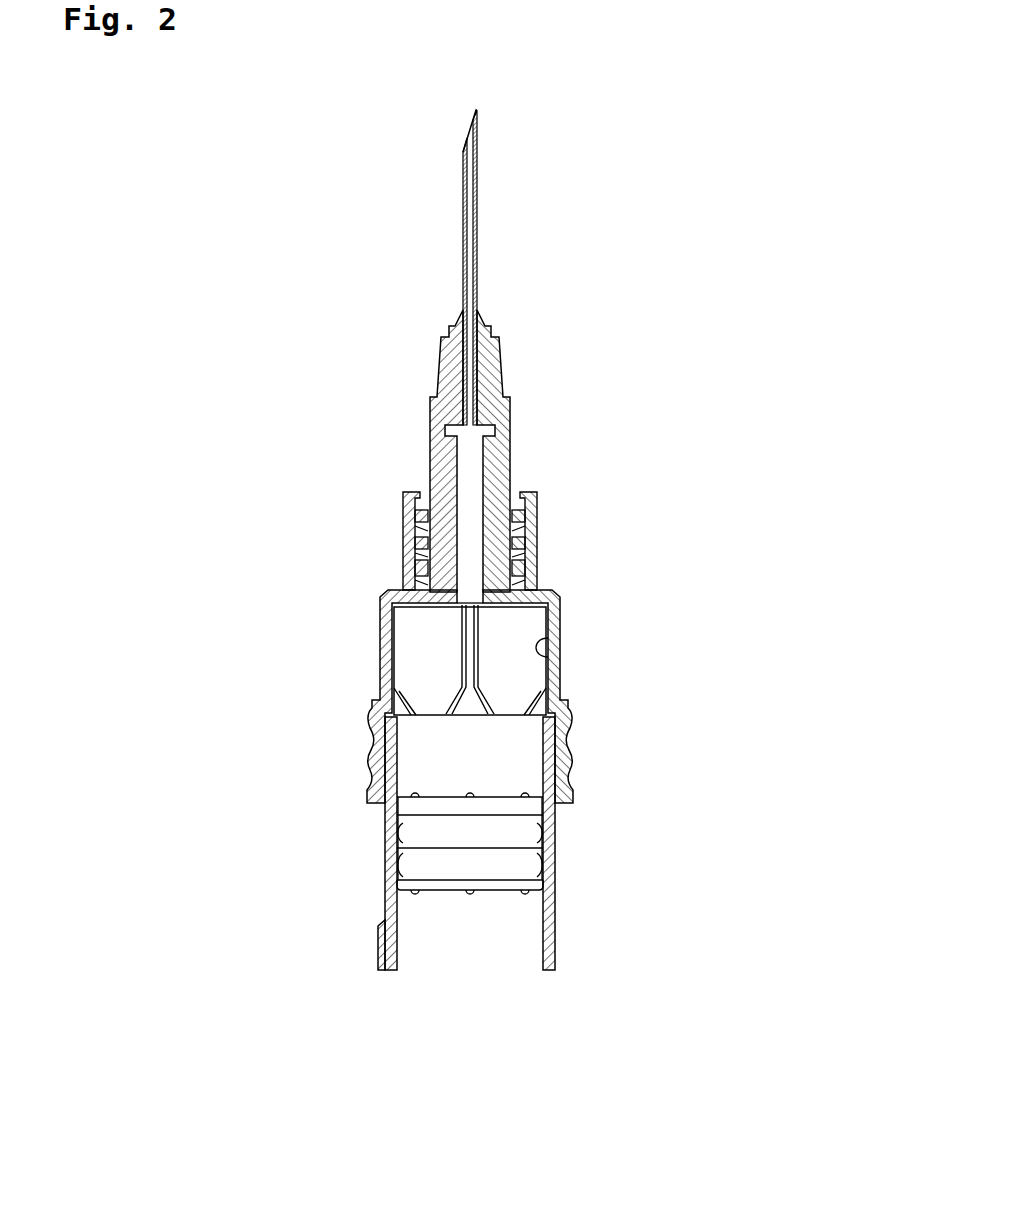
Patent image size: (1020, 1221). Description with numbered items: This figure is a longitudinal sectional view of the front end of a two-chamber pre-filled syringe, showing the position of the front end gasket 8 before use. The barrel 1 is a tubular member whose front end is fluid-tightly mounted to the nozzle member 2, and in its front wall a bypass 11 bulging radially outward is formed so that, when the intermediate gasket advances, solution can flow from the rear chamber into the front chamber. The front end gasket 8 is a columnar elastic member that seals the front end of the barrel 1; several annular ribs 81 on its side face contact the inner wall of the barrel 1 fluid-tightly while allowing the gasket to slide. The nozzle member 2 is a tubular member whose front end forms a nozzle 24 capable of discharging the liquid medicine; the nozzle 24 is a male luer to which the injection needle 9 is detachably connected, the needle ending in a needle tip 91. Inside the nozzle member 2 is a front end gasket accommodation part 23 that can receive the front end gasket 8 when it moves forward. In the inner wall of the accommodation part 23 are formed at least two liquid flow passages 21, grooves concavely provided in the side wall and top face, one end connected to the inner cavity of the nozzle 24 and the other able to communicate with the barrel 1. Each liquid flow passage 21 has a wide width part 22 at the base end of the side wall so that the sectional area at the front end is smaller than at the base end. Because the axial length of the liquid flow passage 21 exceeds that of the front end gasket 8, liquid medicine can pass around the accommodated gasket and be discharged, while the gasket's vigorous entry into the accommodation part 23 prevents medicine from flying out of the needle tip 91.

The barrel 1 is at (557, 940).
The bypass 11 is at (378, 955).
The nozzle member 2 is at (568, 597).
The liquid flow passage 21 is at (560, 657).
The wide width part 22 is at (450, 702).
The front end gasket accommodation part 23 is at (425, 648).
The nozzle 24 is at (512, 462).
The front end gasket 8 is at (582, 947).
The annular rib 81 is at (437, 848).
The injection needle 9 is at (440, 370).
The needle tip 91 is at (477, 258).